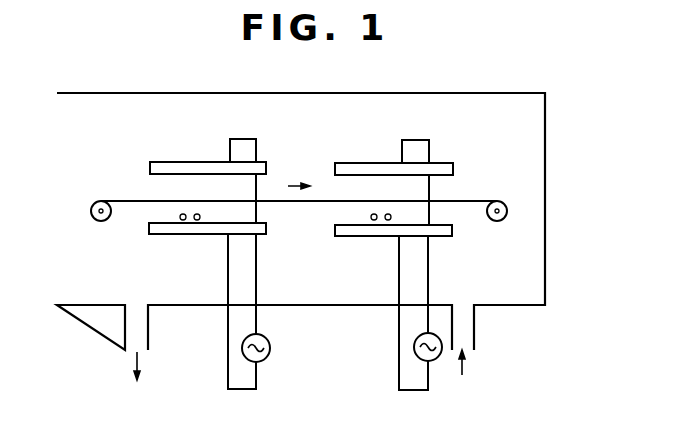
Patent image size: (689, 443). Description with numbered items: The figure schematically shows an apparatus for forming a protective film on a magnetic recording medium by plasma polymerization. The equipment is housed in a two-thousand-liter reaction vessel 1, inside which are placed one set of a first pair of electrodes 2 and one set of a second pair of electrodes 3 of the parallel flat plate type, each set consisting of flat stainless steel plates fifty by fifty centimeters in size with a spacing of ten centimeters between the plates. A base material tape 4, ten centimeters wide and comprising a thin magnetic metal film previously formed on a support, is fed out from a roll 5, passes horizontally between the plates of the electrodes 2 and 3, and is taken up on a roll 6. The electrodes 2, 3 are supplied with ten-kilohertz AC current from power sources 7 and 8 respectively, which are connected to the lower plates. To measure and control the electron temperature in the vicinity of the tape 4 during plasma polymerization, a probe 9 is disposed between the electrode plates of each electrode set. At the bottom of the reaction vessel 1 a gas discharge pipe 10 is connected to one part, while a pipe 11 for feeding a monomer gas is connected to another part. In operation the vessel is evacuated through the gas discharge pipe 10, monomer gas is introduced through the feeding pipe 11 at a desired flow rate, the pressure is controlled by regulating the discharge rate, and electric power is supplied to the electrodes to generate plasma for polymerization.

The reaction vessel 1 is at (553, 144).
The first pair of electrodes 2 is at (165, 162).
The second pair of electrodes 3 is at (360, 162).
The base material tape 4 is at (297, 202).
The roll 5 is at (97, 220).
The roll 6 is at (503, 219).
The power source 7 is at (268, 359).
The power source 8 is at (374, 220).
The probe 9 is at (183, 220).
The gas discharge pipe 10 is at (125, 335).
The pipe for feeding a monomer gas 11 is at (474, 335).